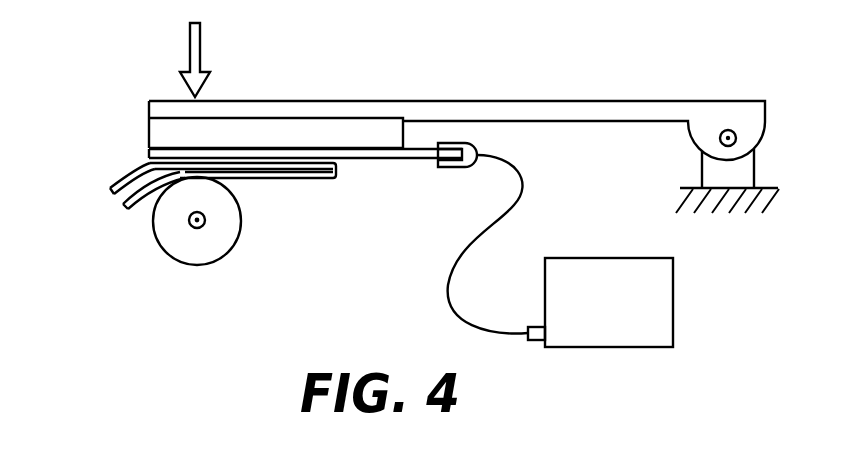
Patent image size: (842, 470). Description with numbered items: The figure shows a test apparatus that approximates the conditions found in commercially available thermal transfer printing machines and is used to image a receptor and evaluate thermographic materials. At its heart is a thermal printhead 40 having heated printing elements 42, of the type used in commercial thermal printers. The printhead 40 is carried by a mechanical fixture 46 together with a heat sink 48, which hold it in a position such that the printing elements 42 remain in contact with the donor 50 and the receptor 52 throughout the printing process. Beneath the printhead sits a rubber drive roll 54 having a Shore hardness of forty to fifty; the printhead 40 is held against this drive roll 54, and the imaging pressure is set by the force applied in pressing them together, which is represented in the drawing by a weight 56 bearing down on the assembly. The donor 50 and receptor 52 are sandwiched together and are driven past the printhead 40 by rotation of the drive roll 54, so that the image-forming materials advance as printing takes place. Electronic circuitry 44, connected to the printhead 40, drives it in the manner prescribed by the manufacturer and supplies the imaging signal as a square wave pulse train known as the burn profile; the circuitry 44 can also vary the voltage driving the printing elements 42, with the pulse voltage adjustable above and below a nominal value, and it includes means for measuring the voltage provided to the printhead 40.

The thermal printhead 40 is at (413, 158).
The heated printing elements 42 is at (149, 161).
The electronic circuitry 44 is at (602, 340).
The mechanical fixture 46 is at (449, 107).
The heat sink 48 is at (150, 133).
The donor 50 is at (102, 190).
The receptor 52 is at (133, 212).
The drive roll 54 is at (202, 254).
The weight 56 is at (199, 41).